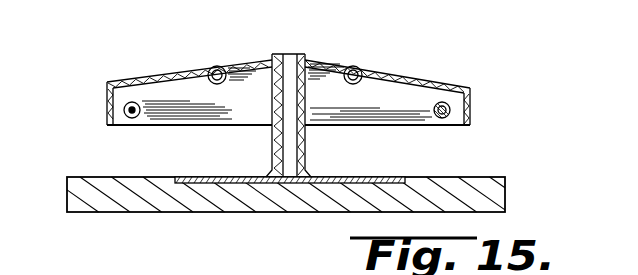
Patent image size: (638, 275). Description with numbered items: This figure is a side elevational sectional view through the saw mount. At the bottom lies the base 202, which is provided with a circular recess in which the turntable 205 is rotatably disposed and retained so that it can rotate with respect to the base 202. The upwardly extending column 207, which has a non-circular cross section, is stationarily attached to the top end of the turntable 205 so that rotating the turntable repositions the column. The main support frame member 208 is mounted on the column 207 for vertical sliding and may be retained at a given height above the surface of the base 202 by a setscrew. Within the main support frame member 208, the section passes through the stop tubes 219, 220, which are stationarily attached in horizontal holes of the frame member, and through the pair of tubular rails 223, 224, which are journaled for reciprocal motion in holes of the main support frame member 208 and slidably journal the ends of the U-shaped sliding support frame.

The base 202 is at (505, 186).
The turntable 205 is at (378, 177).
The column 207 is at (272, 146).
The main support frame member 208 is at (182, 63).
The stop tube 219 is at (361, 69).
The stop tube 220 is at (228, 70).
The tubular rail 223 is at (451, 106).
The tubular rail 224 is at (126, 105).